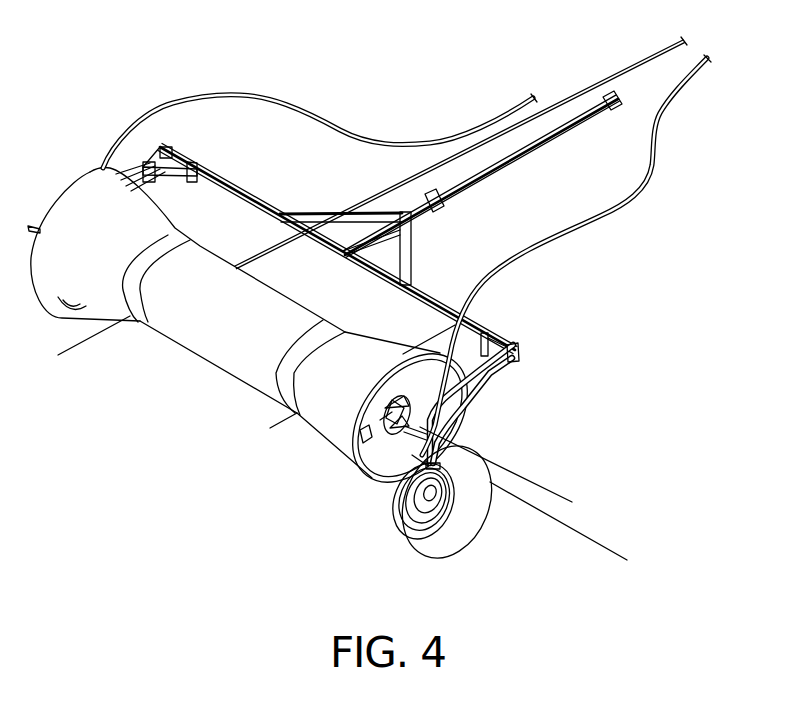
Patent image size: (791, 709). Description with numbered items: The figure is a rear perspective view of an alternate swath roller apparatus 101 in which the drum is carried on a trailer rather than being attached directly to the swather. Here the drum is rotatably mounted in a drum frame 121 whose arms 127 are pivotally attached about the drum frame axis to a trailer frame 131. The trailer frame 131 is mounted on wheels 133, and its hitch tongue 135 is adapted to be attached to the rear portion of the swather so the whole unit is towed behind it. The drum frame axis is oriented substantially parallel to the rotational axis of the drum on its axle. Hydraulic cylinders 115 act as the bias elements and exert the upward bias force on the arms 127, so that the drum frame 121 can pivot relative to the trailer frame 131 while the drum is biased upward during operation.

The swath roller apparatus 101 is at (399, 311).
The hydraulic cylinders 115 is at (410, 455).
The drum frame 121 is at (398, 432).
The arms 127 is at (398, 432).
The trailer frame 131 is at (507, 343).
The wheels 133 is at (457, 547).
The hitch tongue 135 is at (620, 100).